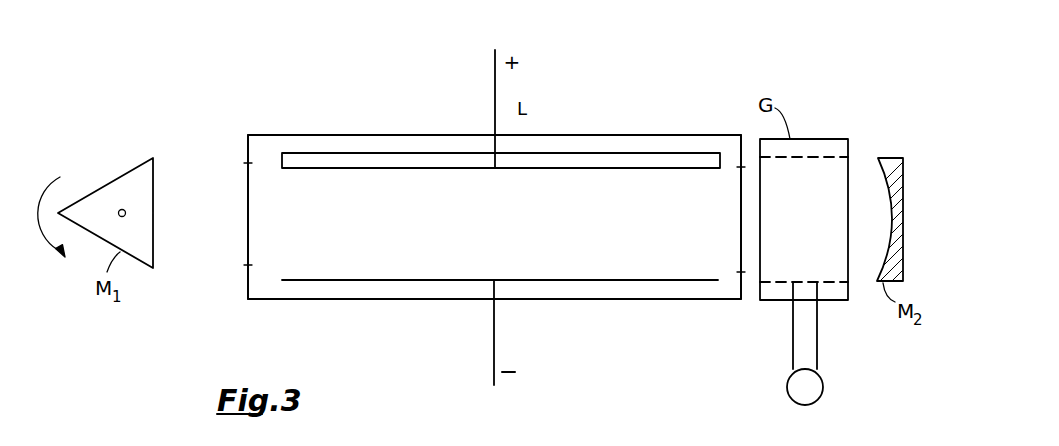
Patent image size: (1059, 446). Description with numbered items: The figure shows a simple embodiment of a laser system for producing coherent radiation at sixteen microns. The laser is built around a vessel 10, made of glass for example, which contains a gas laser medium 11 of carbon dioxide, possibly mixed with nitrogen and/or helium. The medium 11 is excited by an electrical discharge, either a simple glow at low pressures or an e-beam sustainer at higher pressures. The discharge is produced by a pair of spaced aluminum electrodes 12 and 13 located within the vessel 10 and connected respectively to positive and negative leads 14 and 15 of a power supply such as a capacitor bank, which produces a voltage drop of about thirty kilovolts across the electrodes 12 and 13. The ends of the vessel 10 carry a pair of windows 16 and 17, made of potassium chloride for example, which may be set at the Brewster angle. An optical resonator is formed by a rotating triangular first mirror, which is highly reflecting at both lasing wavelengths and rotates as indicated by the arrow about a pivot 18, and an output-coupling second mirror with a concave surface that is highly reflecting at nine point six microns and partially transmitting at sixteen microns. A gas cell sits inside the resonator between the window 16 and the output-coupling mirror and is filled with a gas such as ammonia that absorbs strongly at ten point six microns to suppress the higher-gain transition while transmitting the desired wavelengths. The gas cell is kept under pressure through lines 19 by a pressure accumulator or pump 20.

The vessel 10 is at (315, 299).
The gas laser medium 11 is at (616, 230).
The electrode 12 is at (613, 158).
The electrode 13 is at (620, 280).
The positive lead 14 is at (495, 110).
The negative lead 15 is at (494, 340).
The window 16 is at (741, 227).
The window 17 is at (248, 220).
The pivot 18 is at (119, 212).
The lines 19 is at (817, 350).
The pump 20 is at (787, 382).